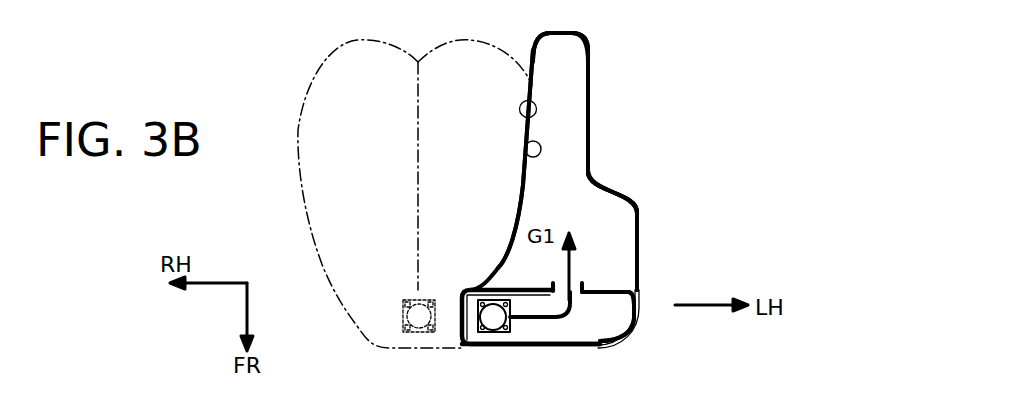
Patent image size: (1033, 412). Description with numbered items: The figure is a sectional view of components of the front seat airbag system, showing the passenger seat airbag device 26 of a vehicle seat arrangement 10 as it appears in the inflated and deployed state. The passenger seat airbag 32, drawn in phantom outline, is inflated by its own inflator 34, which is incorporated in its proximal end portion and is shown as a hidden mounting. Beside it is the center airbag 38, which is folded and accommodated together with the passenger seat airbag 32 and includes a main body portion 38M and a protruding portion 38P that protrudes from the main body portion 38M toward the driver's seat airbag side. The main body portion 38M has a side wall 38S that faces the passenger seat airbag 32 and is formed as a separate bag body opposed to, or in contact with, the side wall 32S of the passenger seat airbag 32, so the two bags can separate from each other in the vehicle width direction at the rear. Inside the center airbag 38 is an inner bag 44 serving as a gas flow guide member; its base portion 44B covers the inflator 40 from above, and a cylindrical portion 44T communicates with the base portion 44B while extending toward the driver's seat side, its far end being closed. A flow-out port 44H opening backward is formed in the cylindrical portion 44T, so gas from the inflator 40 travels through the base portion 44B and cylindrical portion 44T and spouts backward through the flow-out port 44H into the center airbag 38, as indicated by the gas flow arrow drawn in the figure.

The vehicle seat 10 is at (711, 154).
The passenger seat airbag device 26 is at (766, 60).
The passenger seat airbag 32 is at (332, 245).
The side wall 32S is at (526, 149).
The inflator 34 is at (403, 312).
The center airbag 38 is at (677, 33).
The main body portion 38M is at (565, 62).
The protruding portion 38P is at (602, 202).
The side wall 38S is at (532, 102).
The inflator 40 is at (492, 322).
The inner bag 44 is at (625, 278).
The flow-out port 44H is at (575, 283).
The cylindrical portion 44T is at (578, 320).
The base portion 44B is at (500, 334).